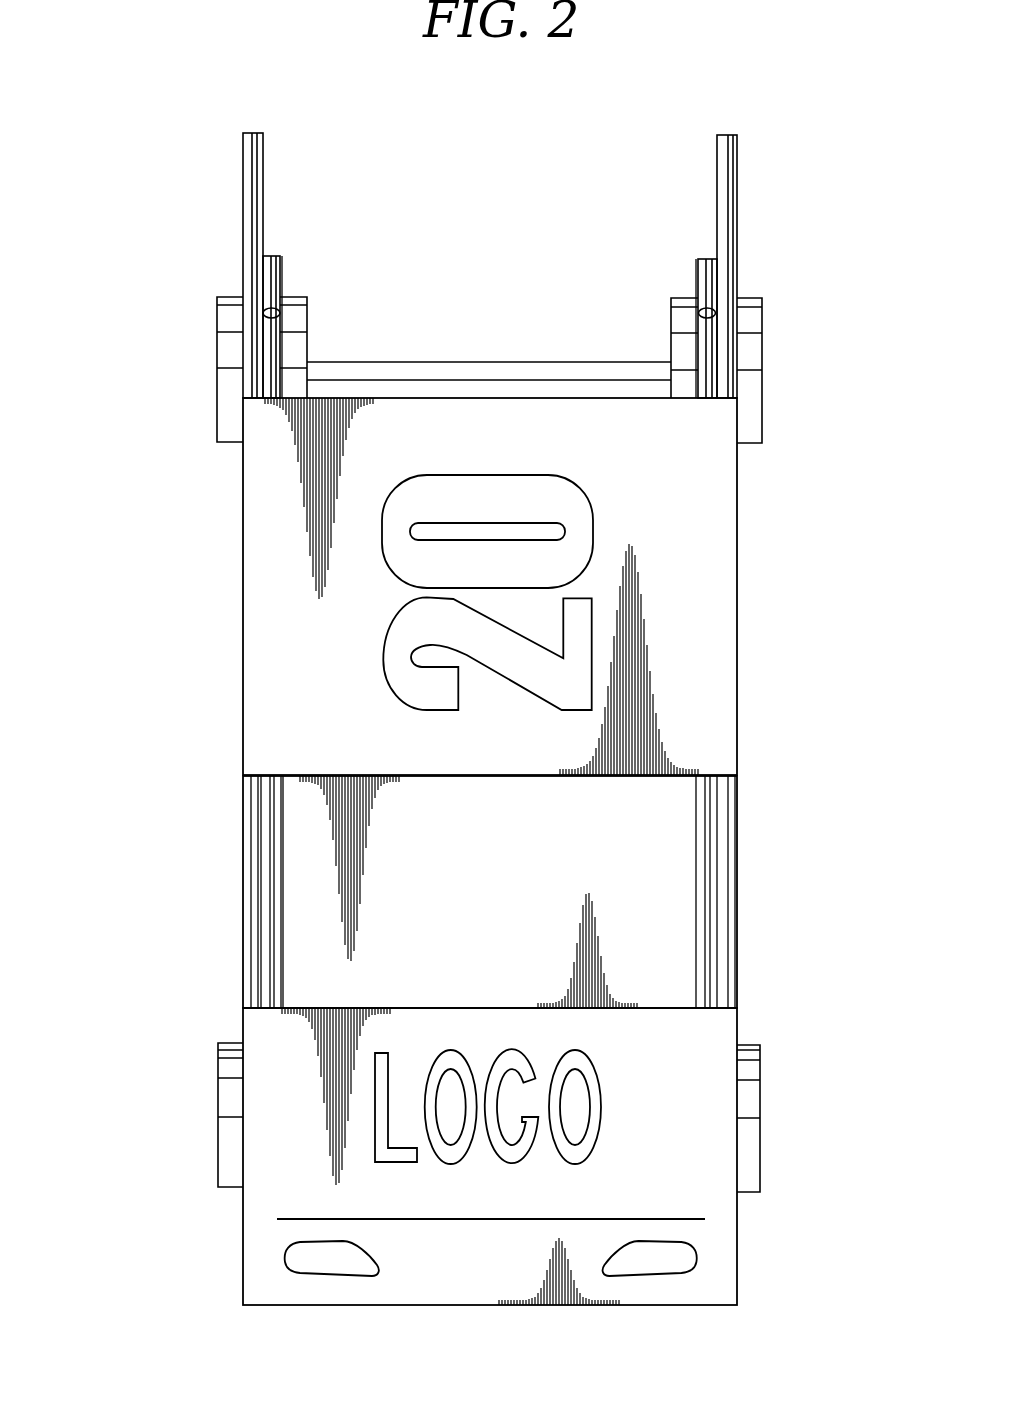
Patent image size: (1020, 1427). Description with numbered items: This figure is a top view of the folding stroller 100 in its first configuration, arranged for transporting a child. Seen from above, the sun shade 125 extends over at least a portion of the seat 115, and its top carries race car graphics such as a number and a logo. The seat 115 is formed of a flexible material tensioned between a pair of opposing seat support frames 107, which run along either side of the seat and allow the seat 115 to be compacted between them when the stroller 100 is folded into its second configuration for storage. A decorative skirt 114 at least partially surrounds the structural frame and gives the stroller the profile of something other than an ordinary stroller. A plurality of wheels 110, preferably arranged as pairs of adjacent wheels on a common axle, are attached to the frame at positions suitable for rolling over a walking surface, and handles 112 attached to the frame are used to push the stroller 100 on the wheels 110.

The folding stroller 100 is at (178, 210).
The seat support frames 107 is at (268, 898).
The wheels 110 is at (215, 392).
The handles 112 is at (273, 338).
The decorative skirt 114 is at (689, 1041).
The seat 115 is at (508, 842).
The sun shade 125 is at (703, 600).